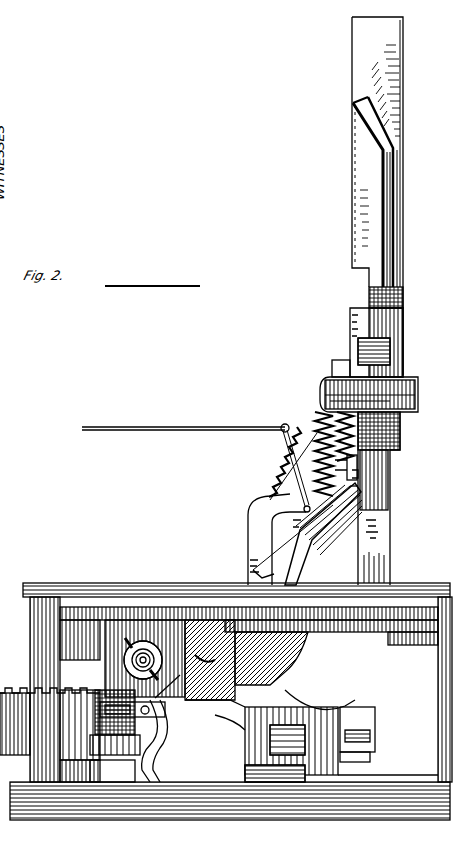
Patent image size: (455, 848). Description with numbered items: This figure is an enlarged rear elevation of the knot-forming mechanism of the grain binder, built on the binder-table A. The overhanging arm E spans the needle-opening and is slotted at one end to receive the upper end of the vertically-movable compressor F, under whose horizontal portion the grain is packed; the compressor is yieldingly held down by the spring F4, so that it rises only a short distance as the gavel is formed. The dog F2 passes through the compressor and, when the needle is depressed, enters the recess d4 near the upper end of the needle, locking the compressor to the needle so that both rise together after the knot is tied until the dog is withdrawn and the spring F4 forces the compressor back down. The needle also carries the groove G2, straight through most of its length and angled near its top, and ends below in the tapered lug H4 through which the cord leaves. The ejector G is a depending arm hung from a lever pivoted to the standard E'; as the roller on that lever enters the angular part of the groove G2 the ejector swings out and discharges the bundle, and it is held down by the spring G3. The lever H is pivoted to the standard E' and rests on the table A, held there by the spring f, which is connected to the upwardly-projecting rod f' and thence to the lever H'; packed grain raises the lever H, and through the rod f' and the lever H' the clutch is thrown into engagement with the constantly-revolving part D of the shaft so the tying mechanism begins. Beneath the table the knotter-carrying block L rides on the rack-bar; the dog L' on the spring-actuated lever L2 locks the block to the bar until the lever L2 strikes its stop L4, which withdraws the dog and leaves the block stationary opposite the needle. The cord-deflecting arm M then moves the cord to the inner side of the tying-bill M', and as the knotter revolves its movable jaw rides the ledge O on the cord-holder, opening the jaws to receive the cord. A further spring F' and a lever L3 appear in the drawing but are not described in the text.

The recess d4 is at (352, 110).
The groove G2 is at (386, 212).
The compressor F is at (288, 465).
The arm E is at (378, 394).
The standard E' is at (384, 498).
The spring F' is at (315, 448).
The spring F4 is at (276, 485).
The dog F2 is at (372, 453).
The lever H' is at (185, 420).
The rod f' is at (281, 471).
The lever H is at (307, 534).
The ejector G is at (329, 520).
The spring G3 is at (291, 525).
The lug H4 is at (353, 472).
The spring f is at (383, 483).
The table A is at (231, 694).
The part of shaft D is at (145, 658).
The tying-bill M' is at (210, 660).
The cord-deflecting arm M is at (271, 658).
The ledge O is at (320, 694).
The dog L' is at (132, 697).
The lever arm L3 is at (167, 688).
The lever L2 is at (402, 788).
The stop L4 is at (352, 724).
The block L is at (261, 755).